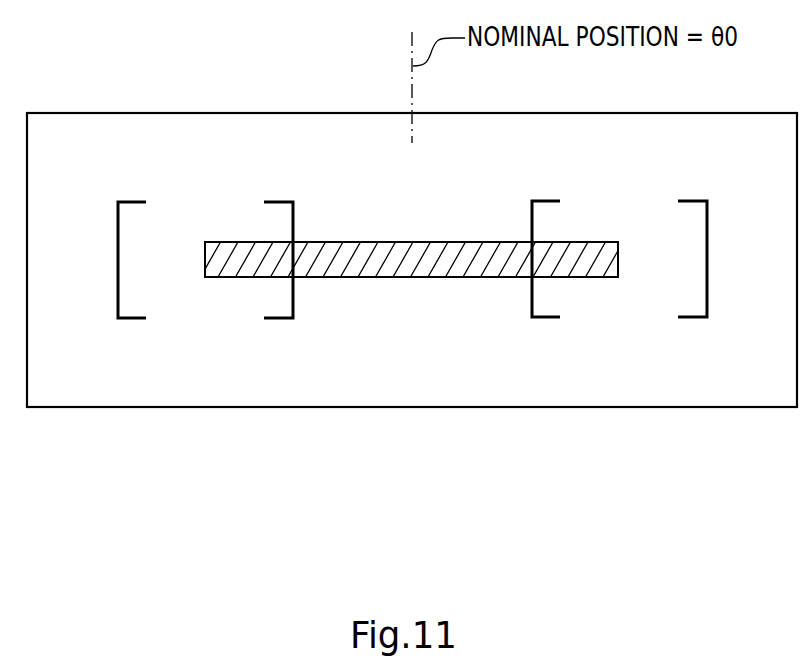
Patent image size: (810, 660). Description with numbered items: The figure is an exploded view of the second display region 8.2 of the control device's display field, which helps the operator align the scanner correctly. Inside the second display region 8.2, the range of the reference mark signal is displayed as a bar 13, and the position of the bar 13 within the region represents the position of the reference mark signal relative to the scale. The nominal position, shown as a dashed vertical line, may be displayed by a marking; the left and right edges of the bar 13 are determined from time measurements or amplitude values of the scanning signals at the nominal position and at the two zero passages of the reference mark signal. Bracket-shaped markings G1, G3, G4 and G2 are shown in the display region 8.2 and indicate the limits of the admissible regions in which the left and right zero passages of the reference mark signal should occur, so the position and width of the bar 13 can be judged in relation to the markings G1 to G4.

The second display region 8.2 is at (235, 407).
The bar 13 is at (403, 268).
The marking G1 is at (131, 200).
The marking G2 is at (700, 200).
The marking G3 is at (277, 200).
The marking G4 is at (553, 200).